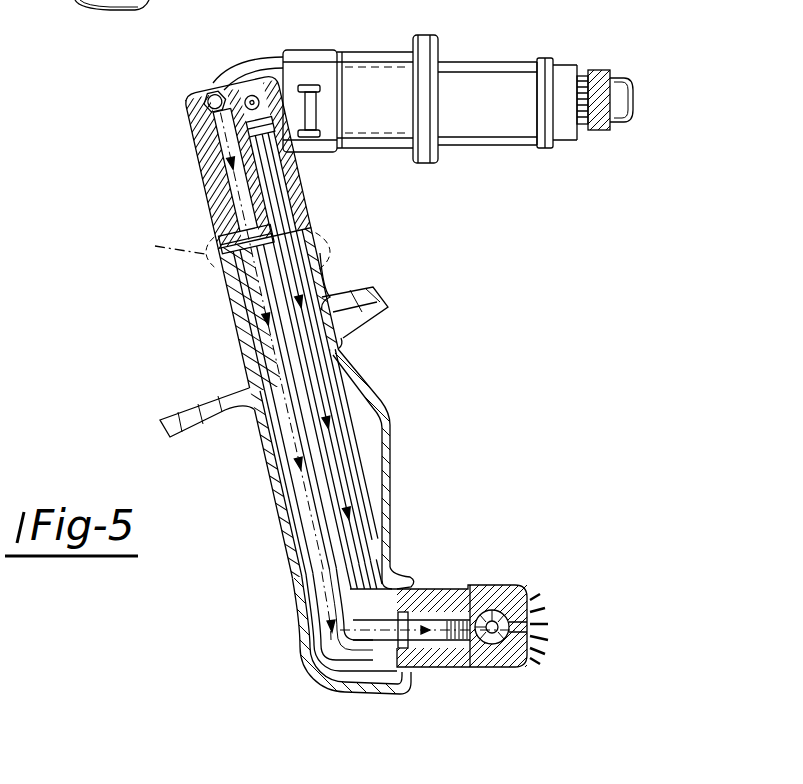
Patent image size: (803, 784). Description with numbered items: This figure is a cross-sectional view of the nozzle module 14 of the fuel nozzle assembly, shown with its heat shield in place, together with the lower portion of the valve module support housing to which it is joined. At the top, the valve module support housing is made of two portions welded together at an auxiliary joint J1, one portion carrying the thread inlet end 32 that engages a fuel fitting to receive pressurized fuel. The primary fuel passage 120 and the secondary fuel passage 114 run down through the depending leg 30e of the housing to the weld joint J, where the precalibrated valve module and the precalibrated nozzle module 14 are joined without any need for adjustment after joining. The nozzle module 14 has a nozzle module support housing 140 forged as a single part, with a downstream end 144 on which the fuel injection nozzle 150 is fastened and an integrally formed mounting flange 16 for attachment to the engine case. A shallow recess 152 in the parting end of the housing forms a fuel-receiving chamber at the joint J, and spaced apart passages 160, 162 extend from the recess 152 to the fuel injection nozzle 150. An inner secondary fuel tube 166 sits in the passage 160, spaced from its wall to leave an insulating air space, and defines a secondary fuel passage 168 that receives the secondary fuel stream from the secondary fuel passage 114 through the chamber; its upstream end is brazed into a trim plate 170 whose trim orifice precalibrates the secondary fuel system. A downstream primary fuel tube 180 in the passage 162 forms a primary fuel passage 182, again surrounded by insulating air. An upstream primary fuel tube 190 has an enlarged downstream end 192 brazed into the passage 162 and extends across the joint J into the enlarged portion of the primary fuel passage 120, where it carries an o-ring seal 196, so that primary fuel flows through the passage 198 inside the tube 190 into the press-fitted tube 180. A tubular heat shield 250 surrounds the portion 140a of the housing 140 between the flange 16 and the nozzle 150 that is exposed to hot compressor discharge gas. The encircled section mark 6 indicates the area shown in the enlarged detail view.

The nozzle module 14 is at (396, 443).
The mounting flange 16 is at (387, 298).
The depending leg 30e is at (203, 171).
The thread inlet end 32 is at (611, 75).
The secondary fuel passage 114 is at (233, 191).
The primary fuel passage 120 is at (247, 117).
The nozzle module support housing 140 is at (300, 511).
The portion of the nozzle module support housing 140a is at (287, 468).
The downstream end 144 is at (158, 4).
The fuel injection nozzle 150 is at (470, 572).
The shallow recess 152 is at (240, 264).
The passage 160 is at (257, 333).
The passage 162 is at (330, 292).
The inner secondary fuel tube 166 is at (237, 347).
The secondary fuel passage 168 is at (247, 408).
The trim plate 170 is at (253, 305).
The downstream primary fuel tube 180 is at (350, 336).
The primary fuel passage 182 is at (345, 388).
The upstream primary fuel tube 190 is at (277, 200).
The enlarged downstream end 192 is at (247, 145).
The o-ring seal 196 is at (307, 155).
The passage 198 is at (283, 212).
The tubular heat shield 250 is at (286, 558).
The auxiliary joint J1 is at (340, 50).
The weld joint J is at (337, 233).
The section indicator 6 is at (167, 246).